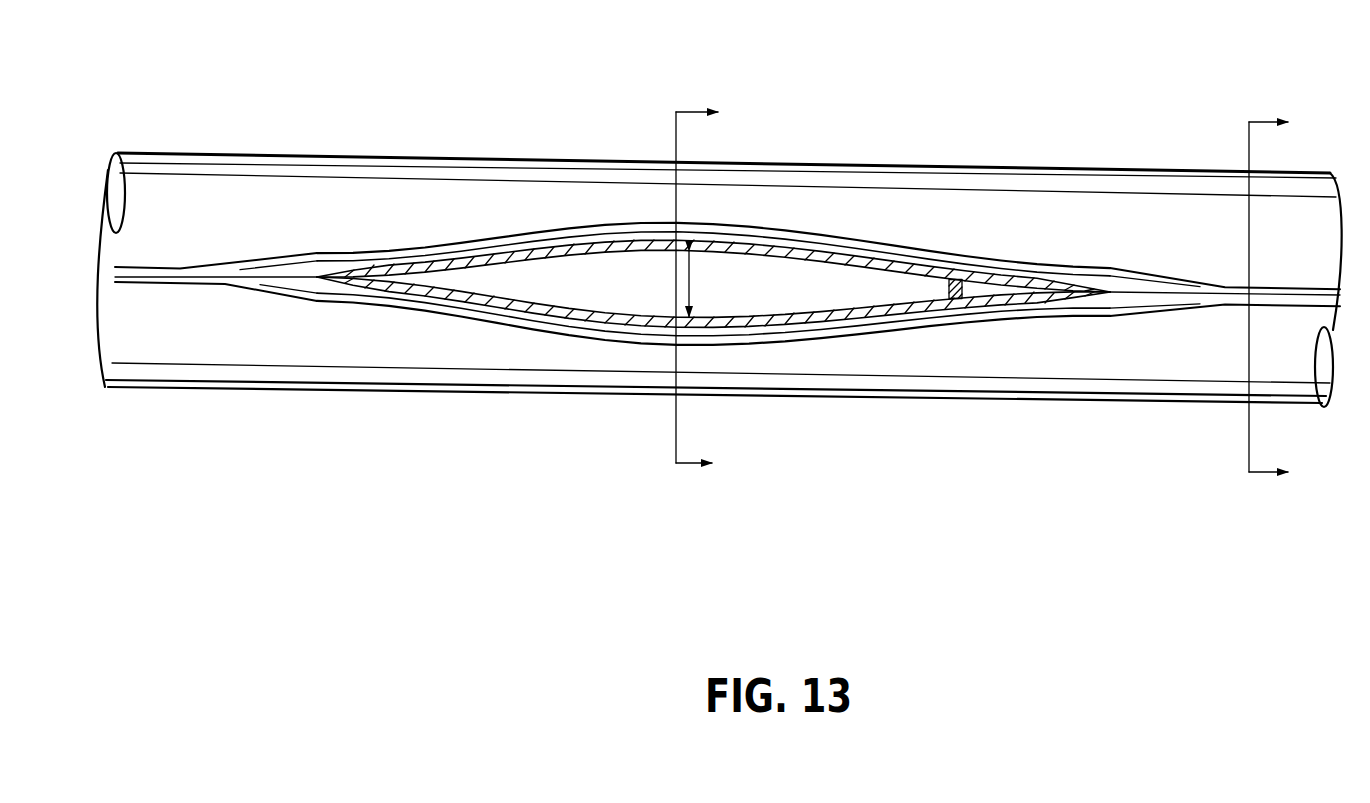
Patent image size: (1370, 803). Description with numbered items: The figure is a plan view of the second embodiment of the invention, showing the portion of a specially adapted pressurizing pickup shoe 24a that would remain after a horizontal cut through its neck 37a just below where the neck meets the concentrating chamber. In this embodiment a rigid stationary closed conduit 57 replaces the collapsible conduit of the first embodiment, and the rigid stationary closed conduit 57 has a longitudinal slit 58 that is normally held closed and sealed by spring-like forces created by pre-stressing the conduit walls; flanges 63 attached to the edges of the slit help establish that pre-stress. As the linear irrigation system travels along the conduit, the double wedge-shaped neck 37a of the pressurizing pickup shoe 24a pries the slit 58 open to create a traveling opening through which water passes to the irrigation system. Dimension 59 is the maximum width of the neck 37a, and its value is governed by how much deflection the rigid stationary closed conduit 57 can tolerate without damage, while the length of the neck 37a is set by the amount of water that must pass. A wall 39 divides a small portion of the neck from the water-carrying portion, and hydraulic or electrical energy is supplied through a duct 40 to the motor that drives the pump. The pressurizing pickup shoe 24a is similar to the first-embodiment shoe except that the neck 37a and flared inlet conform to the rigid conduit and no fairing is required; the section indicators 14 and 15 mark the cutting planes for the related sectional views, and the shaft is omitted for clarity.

The rigid stationary closed conduit 57 is at (1097, 388).
The longitudinal slit 58 is at (1270, 287).
The flanges 63 is at (427, 247).
The duct 40 is at (985, 290).
The neck 37a is at (713, 363).
The pressurizing pickup shoe 24a is at (840, 320).
The wall 39 is at (949, 280).
The dimension 59 is at (690, 282).
The section line 15- 15 is at (715, 290).
The section line 14- 14 is at (1285, 299).